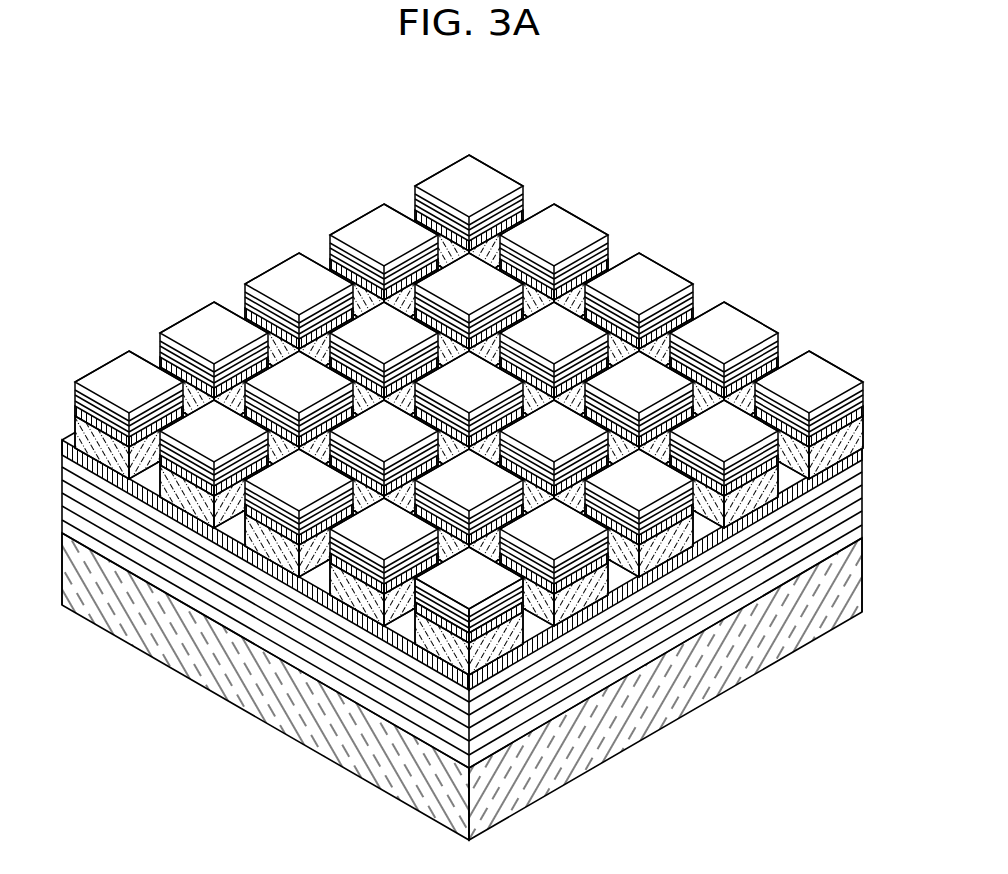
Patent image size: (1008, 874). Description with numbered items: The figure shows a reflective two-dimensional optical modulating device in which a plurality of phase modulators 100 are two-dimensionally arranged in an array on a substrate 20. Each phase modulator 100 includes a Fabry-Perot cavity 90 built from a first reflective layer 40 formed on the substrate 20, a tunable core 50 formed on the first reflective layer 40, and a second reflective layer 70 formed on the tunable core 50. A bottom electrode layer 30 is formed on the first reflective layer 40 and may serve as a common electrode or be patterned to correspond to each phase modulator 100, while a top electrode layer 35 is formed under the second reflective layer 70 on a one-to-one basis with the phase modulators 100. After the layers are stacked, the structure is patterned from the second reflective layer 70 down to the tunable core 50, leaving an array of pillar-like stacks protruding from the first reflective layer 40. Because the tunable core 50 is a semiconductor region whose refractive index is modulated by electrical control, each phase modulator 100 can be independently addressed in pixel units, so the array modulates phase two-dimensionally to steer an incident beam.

The substrate 20 is at (705, 678).
The bottom electrode layer 30 is at (368, 622).
The top electrode layer 35 is at (440, 617).
The first reflective layer 40 is at (490, 712).
The tunable core 50 is at (498, 643).
The second reflective layer 70 is at (505, 605).
The Fabry-Perot cavity 90 is at (675, 795).
The phase modulator 100 is at (491, 700).